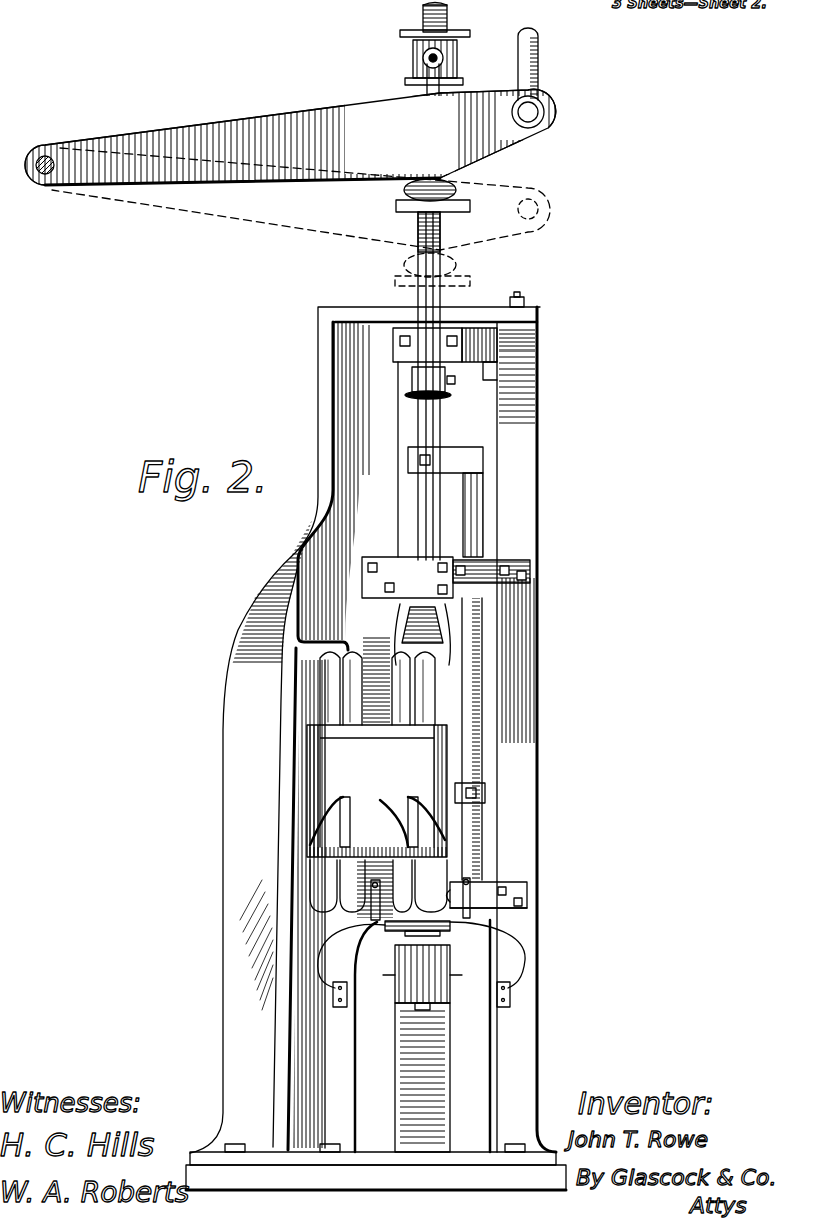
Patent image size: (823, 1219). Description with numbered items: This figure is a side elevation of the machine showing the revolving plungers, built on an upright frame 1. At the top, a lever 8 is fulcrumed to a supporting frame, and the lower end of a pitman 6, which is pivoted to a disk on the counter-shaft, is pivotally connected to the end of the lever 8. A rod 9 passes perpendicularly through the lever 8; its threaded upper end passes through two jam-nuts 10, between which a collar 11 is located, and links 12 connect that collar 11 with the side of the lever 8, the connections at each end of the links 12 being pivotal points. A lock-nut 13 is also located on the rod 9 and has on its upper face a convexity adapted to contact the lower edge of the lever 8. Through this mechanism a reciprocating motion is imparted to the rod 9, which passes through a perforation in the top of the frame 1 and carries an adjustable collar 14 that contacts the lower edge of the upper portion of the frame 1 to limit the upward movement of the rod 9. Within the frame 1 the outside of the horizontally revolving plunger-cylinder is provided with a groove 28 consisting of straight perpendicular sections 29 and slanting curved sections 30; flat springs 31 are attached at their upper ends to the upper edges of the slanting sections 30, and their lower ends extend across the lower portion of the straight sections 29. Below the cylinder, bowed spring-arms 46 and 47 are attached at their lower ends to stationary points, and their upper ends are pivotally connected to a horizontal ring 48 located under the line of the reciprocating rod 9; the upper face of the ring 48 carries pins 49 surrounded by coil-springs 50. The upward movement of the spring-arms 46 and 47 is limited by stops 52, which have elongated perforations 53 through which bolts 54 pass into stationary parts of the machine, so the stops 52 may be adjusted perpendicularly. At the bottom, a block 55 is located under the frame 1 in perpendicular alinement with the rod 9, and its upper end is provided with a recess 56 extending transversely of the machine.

The upright frame 1 is at (318, 430).
The pitman 6 is at (540, 70).
The lever 8 is at (215, 120).
The rod 9 is at (450, 386).
The jam-nuts 10 is at (400, 38).
The collar 11 is at (446, 58).
The links 12 is at (425, 100).
The lock-nut 13 is at (396, 205).
The adjustable collar 14 is at (448, 398).
The groove 28 is at (350, 797).
The straight perpendicular sections 29 is at (413, 828).
The slanting curved sections 30 is at (377, 821).
The flat springs 31 is at (400, 812).
The spring-arm 46 is at (527, 950).
The spring-arm 47 is at (247, 945).
The horizontal ring 48 is at (390, 935).
The pins 49 is at (528, 912).
The coil-springs 50 is at (462, 926).
The stops 52 is at (355, 900).
The elongated perforations 53 is at (470, 880).
The bolts 54 is at (500, 884).
The block 55 is at (437, 1077).
The recess 56 is at (445, 1012).